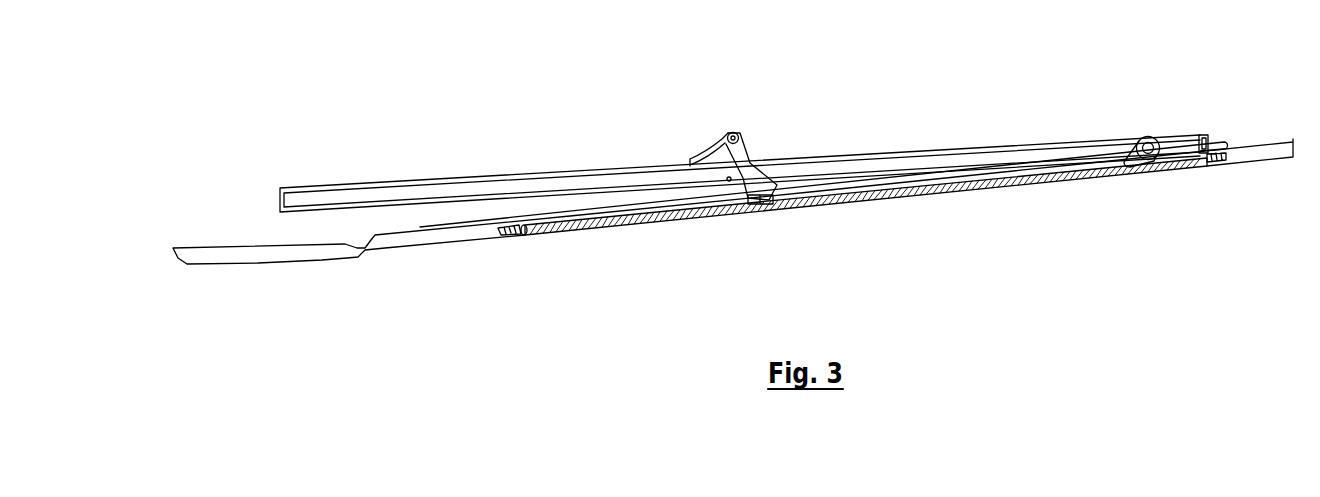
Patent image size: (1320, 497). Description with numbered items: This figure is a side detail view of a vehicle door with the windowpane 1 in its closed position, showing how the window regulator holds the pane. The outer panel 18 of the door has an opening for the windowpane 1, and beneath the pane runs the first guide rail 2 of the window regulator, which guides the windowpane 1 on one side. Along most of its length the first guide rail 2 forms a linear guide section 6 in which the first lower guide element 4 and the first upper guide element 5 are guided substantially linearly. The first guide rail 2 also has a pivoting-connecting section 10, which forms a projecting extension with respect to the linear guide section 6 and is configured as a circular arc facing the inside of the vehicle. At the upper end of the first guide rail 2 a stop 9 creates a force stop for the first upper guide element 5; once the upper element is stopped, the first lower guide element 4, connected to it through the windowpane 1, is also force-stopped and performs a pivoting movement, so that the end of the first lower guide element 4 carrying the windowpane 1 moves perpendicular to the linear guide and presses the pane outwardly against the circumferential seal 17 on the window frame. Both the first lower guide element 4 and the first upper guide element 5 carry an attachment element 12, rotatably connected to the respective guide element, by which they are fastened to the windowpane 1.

The windowpane 1 is at (963, 188).
The first guide rail 2 is at (820, 153).
The first lower guide element 4 is at (752, 142).
The first upper guide element 5 is at (1175, 137).
The linear guide section 6 is at (539, 165).
The stop 9 is at (1203, 130).
The pivoting-connecting section 10 is at (695, 152).
The attachment element 12 is at (775, 198).
The circumferential seal 17 is at (510, 237).
The outer panel 18 is at (298, 262).